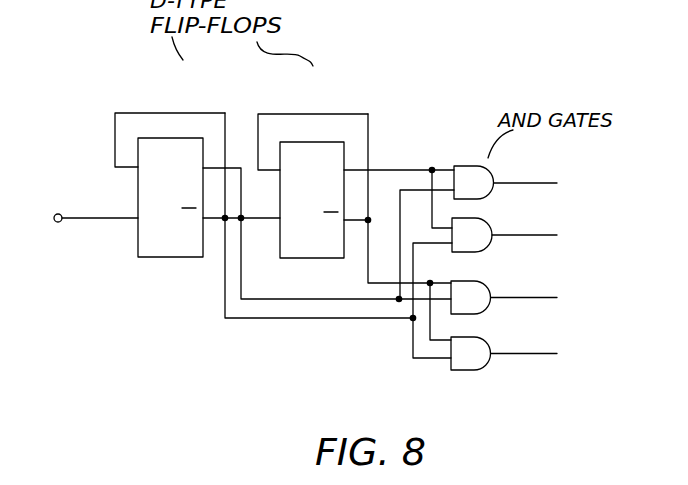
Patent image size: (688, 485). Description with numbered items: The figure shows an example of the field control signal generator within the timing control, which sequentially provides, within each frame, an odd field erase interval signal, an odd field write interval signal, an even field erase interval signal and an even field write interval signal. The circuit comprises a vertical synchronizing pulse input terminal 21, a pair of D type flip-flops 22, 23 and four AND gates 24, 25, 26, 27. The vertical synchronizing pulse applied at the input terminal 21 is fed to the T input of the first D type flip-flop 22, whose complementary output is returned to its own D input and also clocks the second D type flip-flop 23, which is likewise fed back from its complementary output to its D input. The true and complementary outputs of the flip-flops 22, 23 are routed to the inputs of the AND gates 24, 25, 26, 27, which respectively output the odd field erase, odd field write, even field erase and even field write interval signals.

The vertical synchronizing pulse input terminal 21 is at (93, 201).
The D type flip-flop 22 is at (170, 150).
The D type flip-flop 23 is at (312, 152).
The AND gate 24 is at (478, 183).
The AND gate 25 is at (478, 236).
The AND gate 26 is at (473, 297).
The AND gate 27 is at (472, 350).